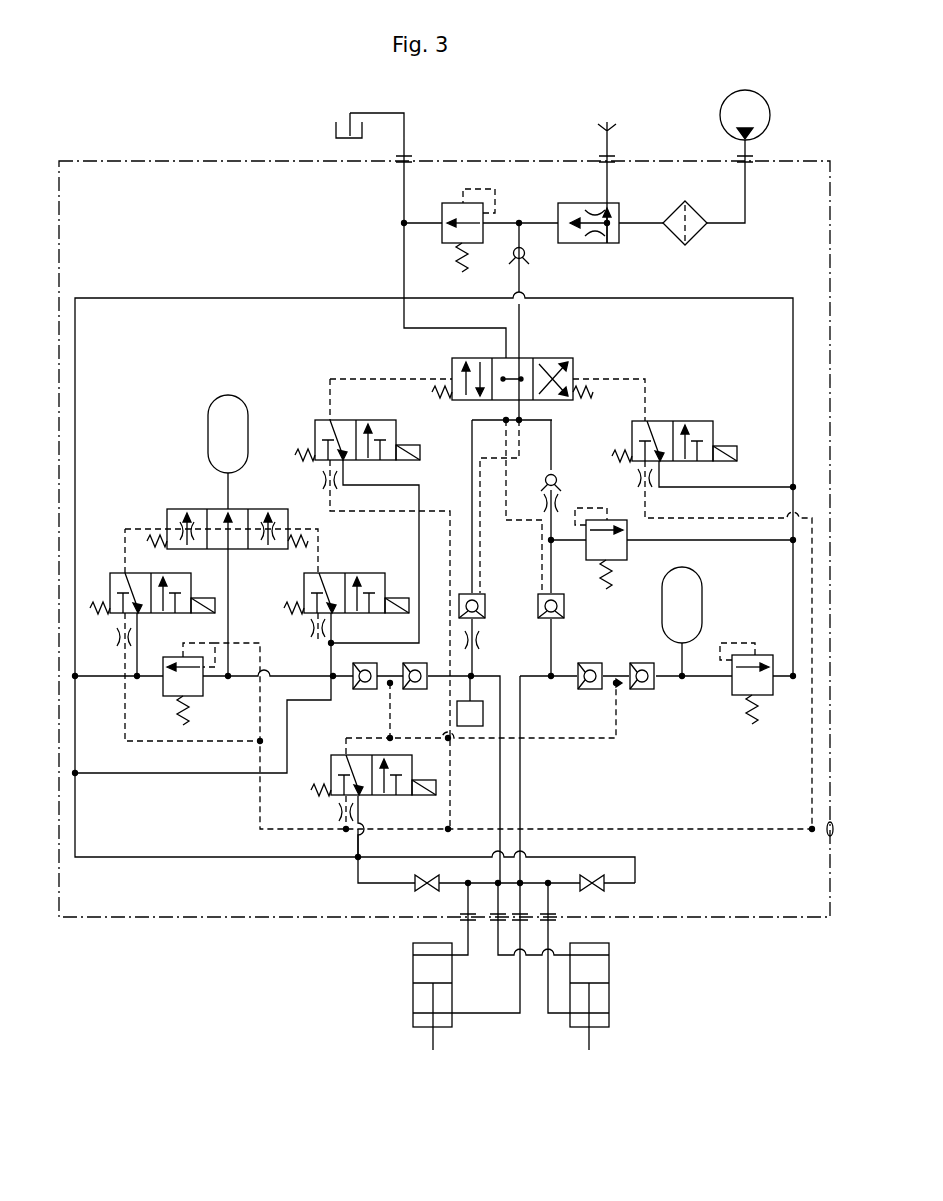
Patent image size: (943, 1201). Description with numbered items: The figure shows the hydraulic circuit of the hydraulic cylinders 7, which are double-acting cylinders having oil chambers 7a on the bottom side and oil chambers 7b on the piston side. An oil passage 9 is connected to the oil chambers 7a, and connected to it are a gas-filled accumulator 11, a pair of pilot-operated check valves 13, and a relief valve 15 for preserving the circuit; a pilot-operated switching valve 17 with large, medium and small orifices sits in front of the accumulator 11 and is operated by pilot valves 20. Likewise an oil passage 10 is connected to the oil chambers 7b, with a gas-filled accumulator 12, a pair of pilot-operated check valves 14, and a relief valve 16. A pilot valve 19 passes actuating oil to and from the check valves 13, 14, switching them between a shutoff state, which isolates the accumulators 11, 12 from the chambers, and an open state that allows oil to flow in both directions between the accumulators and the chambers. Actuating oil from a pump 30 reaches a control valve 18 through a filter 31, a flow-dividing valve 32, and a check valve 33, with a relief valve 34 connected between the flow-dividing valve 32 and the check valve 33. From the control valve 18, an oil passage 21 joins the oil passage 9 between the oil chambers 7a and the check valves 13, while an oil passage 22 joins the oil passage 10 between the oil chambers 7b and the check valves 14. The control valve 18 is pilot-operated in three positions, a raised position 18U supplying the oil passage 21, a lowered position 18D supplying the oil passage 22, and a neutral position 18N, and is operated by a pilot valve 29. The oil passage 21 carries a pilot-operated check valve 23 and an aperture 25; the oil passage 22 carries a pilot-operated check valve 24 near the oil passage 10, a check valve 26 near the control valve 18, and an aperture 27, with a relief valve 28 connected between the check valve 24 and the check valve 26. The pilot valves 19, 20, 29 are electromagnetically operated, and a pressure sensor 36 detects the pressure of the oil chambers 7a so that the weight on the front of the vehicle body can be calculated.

The hydraulic cylinders 7 is at (346, 940).
The oil chambers on the bottom side 7a is at (415, 960).
The oil chambers on the piston side 7b is at (420, 998).
The oil passage 9 is at (245, 680).
The oil passage 10 is at (522, 790).
The gas-filled accumulator 11 is at (210, 430).
The gas-filled accumulator 12 is at (702, 603).
The pilot-operated check valves 13 is at (412, 690).
The pilot-operated check valves 14 is at (642, 663).
The relief valve 15 is at (170, 696).
The relief valve 16 is at (740, 696).
The pilot-operated switching valve 17 is at (200, 509).
The control valve 18 is at (578, 379).
The lowered position 18D is at (452, 372).
The neutral position 18N is at (533, 360).
The raised position 18U is at (552, 365).
The pilot valve 19 is at (330, 765).
The pilot valves 20 is at (110, 580).
The oil passage 21 is at (472, 478).
The oil passage 22 is at (552, 452).
The pilot-operated check valve 23 is at (483, 598).
The pilot-operated check valve 24 is at (537, 612).
The aperture 25 is at (478, 641).
The check valve 26 is at (557, 482).
The aperture 27 is at (560, 503).
The relief valve 28 is at (627, 551).
The pilot valve 29 is at (340, 440).
The pump 30 is at (752, 91).
The filter 31 is at (700, 235).
The flow-dividing valve 32 is at (603, 243).
The check valve 33 is at (526, 260).
The relief valve 34 is at (452, 203).
The pressure sensor 36 is at (470, 726).